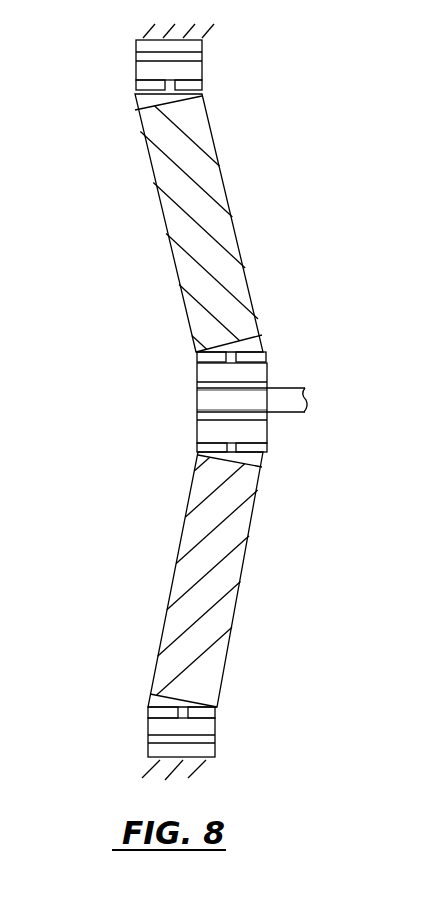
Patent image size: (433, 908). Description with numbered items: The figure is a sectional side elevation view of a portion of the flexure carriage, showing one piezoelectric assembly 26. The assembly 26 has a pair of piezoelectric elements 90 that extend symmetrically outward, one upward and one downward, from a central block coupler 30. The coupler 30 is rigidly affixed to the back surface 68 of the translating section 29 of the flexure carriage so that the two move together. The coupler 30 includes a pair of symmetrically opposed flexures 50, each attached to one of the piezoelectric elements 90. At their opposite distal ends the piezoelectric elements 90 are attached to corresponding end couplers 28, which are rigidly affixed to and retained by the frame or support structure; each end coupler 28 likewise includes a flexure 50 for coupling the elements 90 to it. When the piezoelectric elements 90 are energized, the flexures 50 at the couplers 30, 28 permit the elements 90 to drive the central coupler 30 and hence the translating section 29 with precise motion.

The piezoelectric assembly 26 is at (262, 116).
The distal end coupler 28 is at (142, 66).
The translating section 29 is at (300, 385).
The central block coupler 30 is at (205, 376).
The flexure 50 is at (124, 88).
The back surface 68 is at (207, 403).
The piezoelectric element 90 is at (172, 214).